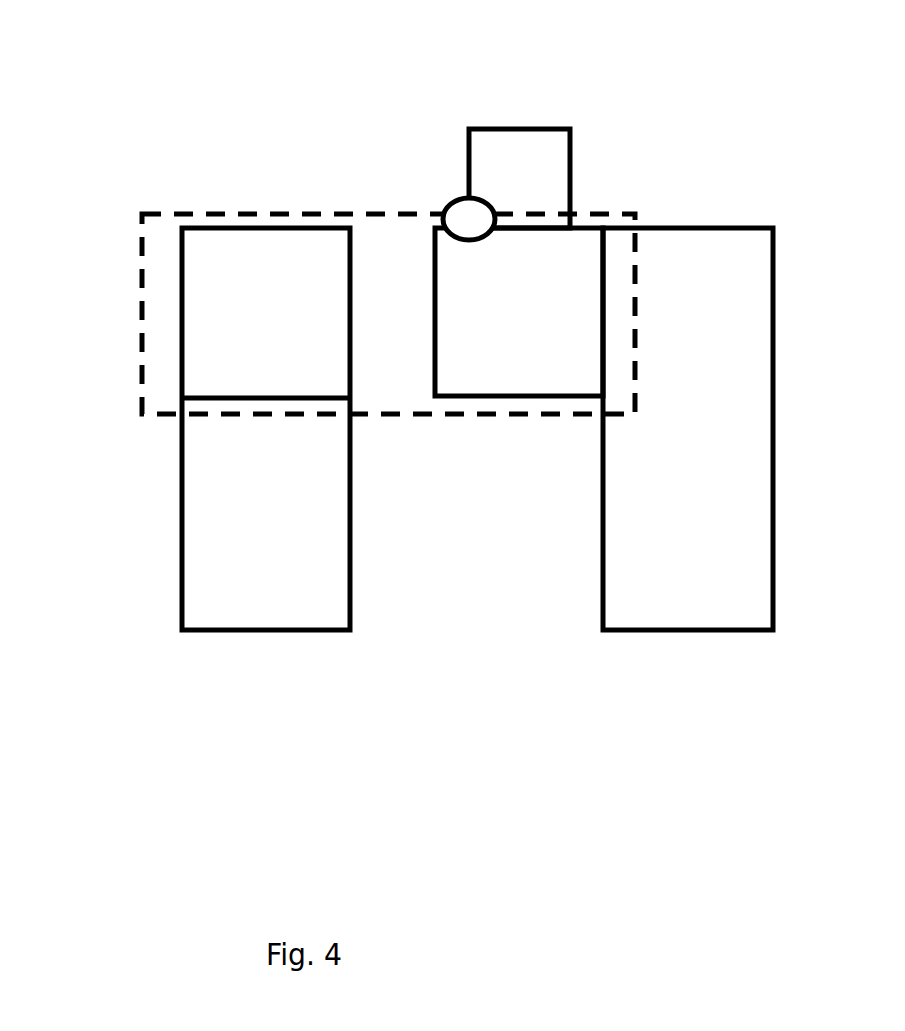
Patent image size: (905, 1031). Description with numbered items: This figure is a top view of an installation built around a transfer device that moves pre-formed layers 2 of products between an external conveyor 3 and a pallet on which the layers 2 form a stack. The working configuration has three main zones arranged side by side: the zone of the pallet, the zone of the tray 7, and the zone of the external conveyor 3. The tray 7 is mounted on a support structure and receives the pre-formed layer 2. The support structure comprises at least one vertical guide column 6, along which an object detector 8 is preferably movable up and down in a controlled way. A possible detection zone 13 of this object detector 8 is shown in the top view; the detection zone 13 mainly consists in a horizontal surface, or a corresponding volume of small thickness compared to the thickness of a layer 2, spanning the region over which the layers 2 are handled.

The pre-formed layer 2 is at (255, 250).
The external conveyor 3 is at (725, 257).
The vertical guide column 6 is at (562, 172).
The tray 7 is at (458, 260).
The object detector 8 is at (469, 209).
The detection zone 13 is at (132, 449).